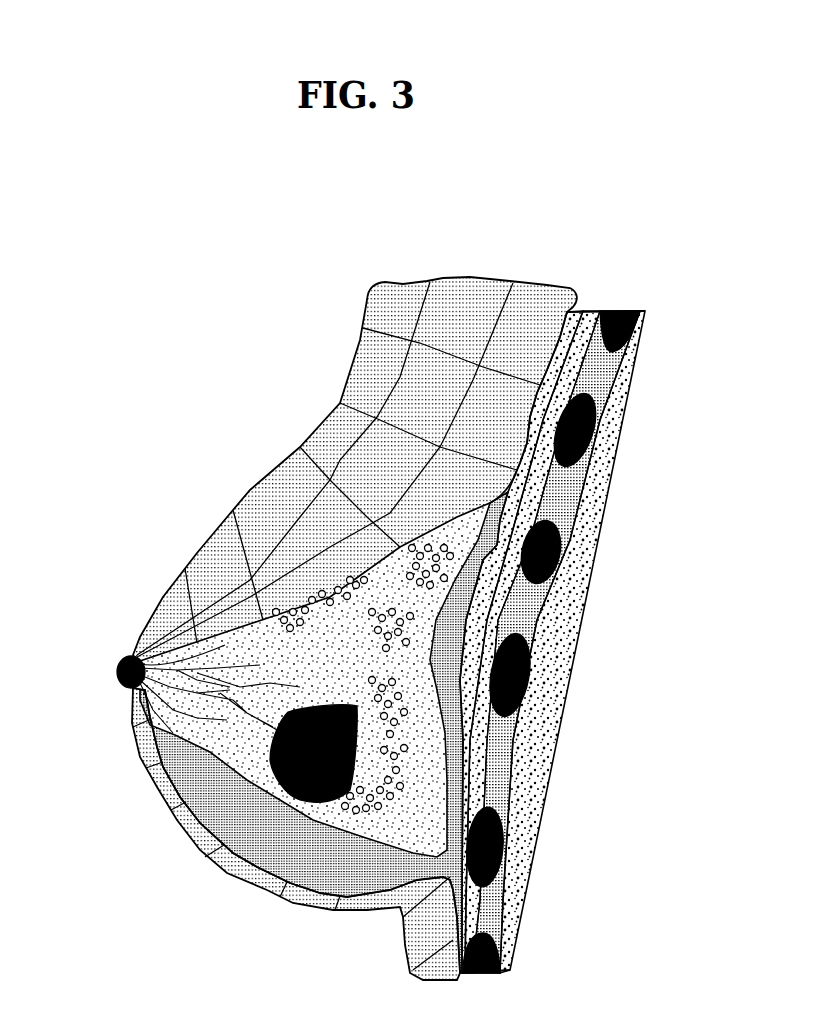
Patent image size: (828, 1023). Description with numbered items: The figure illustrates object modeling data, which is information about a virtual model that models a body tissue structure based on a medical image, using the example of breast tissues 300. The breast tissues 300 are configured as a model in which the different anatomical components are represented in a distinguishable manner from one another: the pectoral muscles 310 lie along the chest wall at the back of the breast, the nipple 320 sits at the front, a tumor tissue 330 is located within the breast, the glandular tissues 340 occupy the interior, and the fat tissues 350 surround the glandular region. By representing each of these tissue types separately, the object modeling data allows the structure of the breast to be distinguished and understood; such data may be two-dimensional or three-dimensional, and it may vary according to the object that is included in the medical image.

The breast tissues 300 is at (186, 406).
The pectoral muscles 310 is at (573, 363).
The nipple 320 is at (120, 664).
The tumor tissue 330 is at (258, 792).
The glandular tissues 340 is at (360, 817).
The fat tissues 350 is at (343, 873).